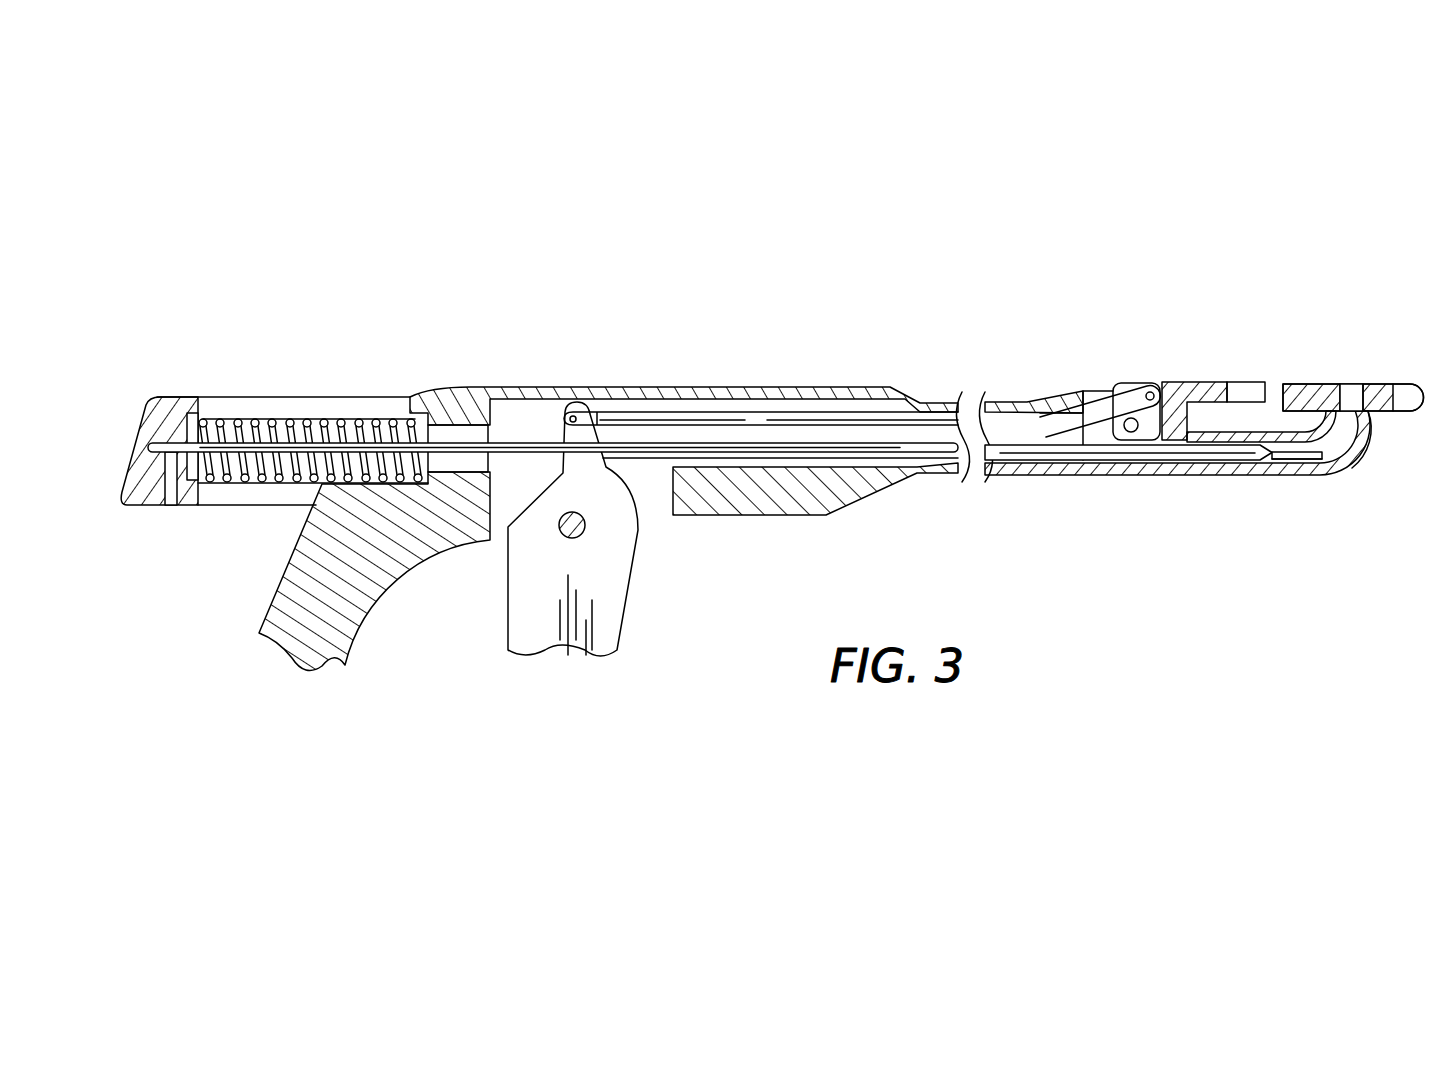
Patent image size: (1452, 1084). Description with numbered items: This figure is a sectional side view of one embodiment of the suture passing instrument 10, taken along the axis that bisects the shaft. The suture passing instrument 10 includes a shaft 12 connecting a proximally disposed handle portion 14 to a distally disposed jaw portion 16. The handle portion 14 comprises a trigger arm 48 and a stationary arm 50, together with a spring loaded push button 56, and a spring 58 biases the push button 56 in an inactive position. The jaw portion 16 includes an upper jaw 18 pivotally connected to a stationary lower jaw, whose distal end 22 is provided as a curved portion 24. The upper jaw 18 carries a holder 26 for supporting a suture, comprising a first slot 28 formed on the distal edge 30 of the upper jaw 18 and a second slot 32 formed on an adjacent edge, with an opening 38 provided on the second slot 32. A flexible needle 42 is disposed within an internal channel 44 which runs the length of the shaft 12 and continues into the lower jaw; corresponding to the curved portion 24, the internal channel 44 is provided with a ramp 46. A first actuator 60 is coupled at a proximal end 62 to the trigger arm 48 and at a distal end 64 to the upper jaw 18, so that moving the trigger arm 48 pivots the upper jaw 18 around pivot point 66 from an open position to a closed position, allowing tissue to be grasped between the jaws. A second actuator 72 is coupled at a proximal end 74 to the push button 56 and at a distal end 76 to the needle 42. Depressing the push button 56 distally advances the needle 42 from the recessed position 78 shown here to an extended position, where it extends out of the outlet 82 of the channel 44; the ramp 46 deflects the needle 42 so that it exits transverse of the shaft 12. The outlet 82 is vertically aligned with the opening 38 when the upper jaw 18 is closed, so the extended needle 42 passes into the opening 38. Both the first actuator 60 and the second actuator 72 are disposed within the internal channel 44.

The suture passing instrument 10 is at (796, 325).
The shaft 12 is at (963, 398).
The handle portion 14 is at (396, 672).
The jaw portion 16 is at (1199, 560).
The upper jaw 18 is at (1190, 380).
The distal end 22 is at (1382, 428).
The curved portion 24 is at (1370, 453).
The holder 26 is at (1328, 330).
The first slot 28 is at (1397, 380).
The distal edge 30 is at (1430, 390).
The second slot 32 is at (1275, 382).
The opening 38 is at (1352, 384).
The needle 42 is at (1307, 462).
The internal channel 44 is at (1040, 472).
The ramp 46 is at (1342, 478).
The trigger arm 48 is at (604, 620).
The stationary arm 50 is at (303, 595).
The push button 56 is at (176, 398).
The spring 58 is at (311, 415).
The first actuator 60 is at (728, 420).
The proximal end 62 is at (565, 419).
The distal end 64 is at (1142, 389).
The pivot point 66 is at (1138, 432).
The second actuator 72 is at (777, 452).
The proximal end 74 is at (124, 507).
The distal end 76 is at (1263, 460).
The recessed position 78 is at (1285, 462).
The outlet 82 is at (1333, 418).